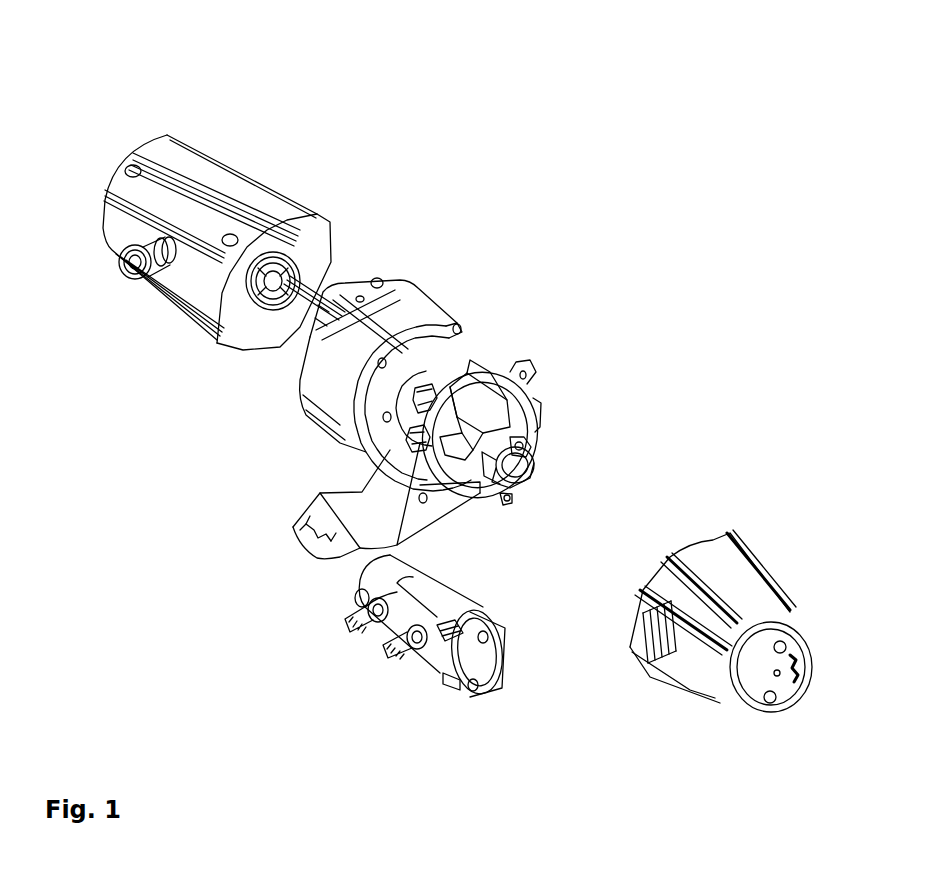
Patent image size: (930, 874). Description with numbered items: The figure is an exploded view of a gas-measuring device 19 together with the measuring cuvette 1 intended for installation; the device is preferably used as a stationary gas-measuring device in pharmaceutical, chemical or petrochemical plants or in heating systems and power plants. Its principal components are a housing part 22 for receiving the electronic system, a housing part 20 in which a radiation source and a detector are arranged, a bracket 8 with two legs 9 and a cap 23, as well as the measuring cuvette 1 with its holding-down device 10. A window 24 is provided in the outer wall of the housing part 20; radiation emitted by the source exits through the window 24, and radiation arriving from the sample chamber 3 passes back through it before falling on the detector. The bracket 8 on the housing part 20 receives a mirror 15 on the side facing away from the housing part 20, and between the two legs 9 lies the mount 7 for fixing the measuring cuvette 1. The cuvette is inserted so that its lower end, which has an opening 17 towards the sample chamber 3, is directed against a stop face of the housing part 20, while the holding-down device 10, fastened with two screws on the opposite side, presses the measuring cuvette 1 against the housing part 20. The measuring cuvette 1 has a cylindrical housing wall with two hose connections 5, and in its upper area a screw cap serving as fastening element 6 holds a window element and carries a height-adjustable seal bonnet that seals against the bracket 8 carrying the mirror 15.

The measuring cuvette 1 is at (361, 646).
The sample chamber 3 is at (457, 584).
The hose connections 5 is at (357, 620).
The fastening element 6 is at (454, 629).
The mount 7 is at (408, 434).
The bracket 8 is at (519, 467).
The legs 9 is at (485, 403).
The holding-down device 10 is at (481, 655).
The mirror 15 is at (532, 447).
The opening 17 is at (350, 582).
The gas-measuring device 19 is at (331, 104).
The housing part 20 is at (422, 316).
The housing part 22 is at (225, 184).
The cap 23 is at (738, 566).
The window 24 is at (407, 398).